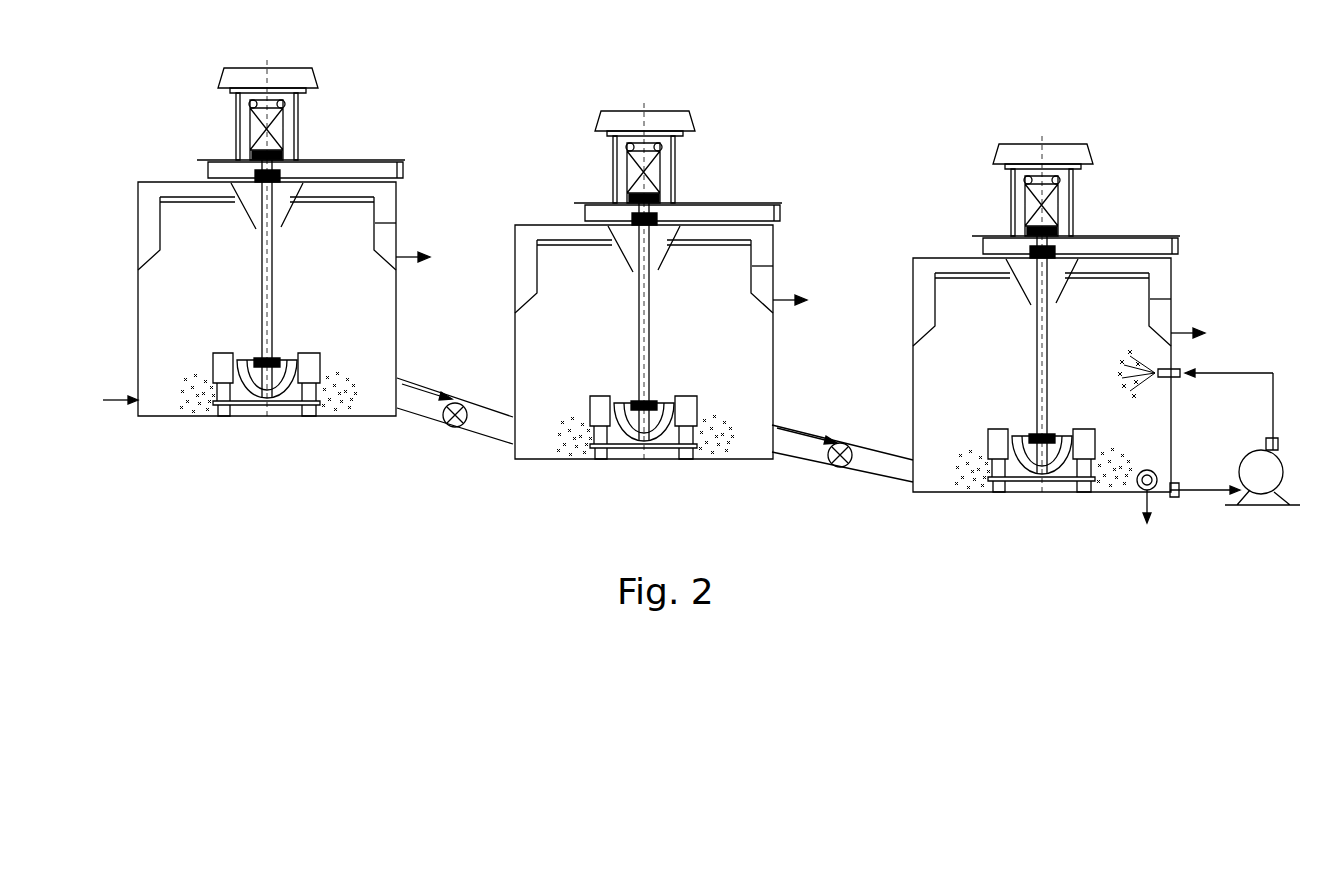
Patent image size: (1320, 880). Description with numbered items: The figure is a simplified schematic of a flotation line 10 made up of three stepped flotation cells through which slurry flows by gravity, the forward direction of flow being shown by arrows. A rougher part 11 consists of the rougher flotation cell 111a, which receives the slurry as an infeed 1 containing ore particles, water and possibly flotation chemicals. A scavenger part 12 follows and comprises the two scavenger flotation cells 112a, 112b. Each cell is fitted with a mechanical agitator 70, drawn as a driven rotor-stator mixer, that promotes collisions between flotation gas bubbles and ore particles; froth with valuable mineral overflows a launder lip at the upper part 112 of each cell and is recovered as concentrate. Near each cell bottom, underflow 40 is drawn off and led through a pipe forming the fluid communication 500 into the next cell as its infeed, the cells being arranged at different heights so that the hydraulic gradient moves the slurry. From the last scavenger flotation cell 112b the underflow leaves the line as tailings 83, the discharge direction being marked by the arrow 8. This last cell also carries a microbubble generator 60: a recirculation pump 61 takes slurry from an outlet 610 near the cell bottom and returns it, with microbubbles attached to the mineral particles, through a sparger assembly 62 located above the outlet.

The flotation line 10 is at (740, 46).
The rougher part 11 is at (333, 148).
The scavenger part 12 is at (843, 181).
The infeed 1 is at (133, 396).
The mechanical agitator 70 is at (258, 265).
The rougher flotation cell 111a is at (192, 316).
The scavenger flotation cell 112a is at (568, 351).
The scavenger flotation cell 112b is at (957, 380).
The upper part 112 is at (1148, 287).
The underflow 40 is at (418, 407).
The fluid communication 500 is at (490, 442).
The microbubble generator 60 is at (1247, 364).
The recirculation pump 61 is at (1256, 450).
The outlet 610 is at (1176, 486).
The sparger assembly 62 is at (1172, 373).
The tailings 83 is at (1140, 498).
The tailings outlet 8 is at (1157, 510).